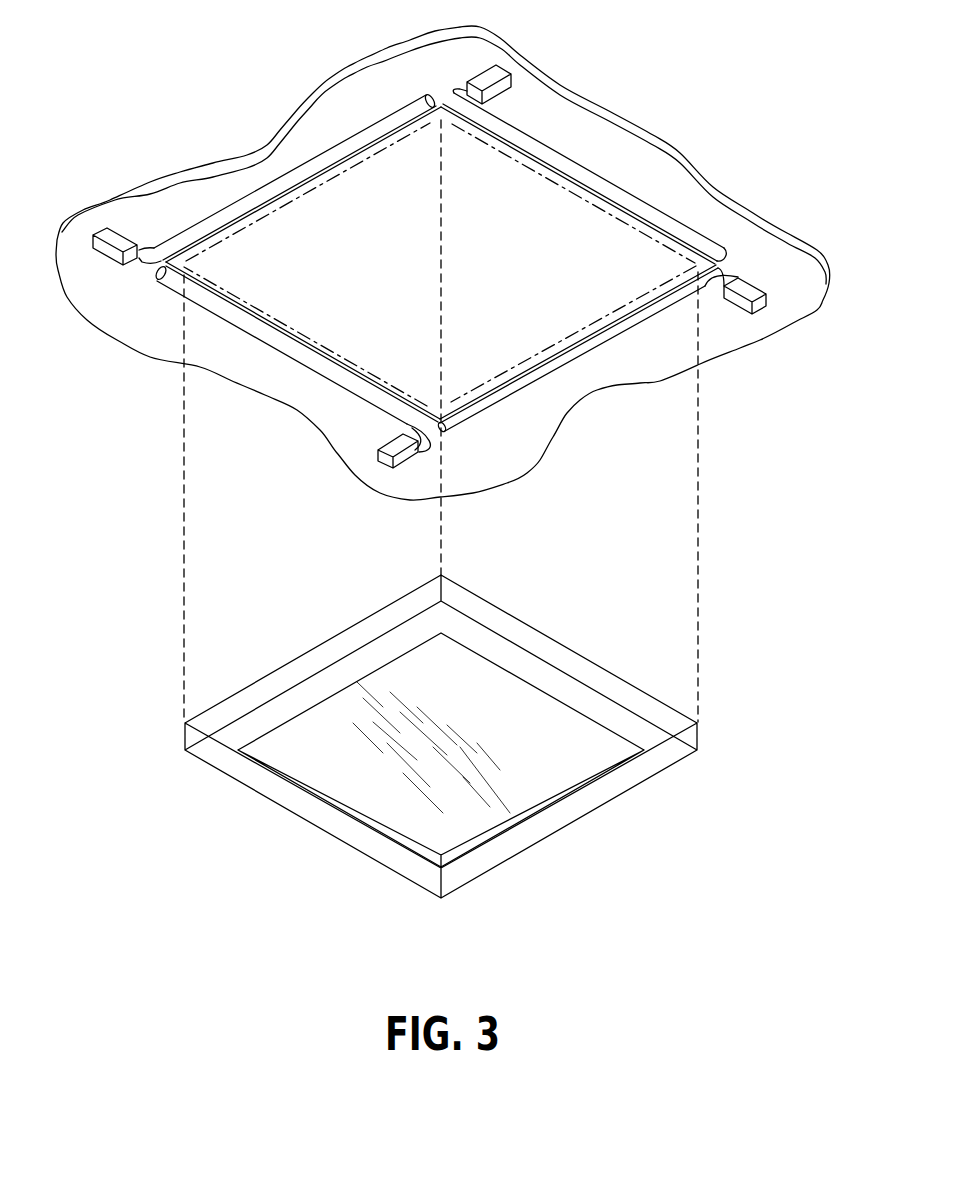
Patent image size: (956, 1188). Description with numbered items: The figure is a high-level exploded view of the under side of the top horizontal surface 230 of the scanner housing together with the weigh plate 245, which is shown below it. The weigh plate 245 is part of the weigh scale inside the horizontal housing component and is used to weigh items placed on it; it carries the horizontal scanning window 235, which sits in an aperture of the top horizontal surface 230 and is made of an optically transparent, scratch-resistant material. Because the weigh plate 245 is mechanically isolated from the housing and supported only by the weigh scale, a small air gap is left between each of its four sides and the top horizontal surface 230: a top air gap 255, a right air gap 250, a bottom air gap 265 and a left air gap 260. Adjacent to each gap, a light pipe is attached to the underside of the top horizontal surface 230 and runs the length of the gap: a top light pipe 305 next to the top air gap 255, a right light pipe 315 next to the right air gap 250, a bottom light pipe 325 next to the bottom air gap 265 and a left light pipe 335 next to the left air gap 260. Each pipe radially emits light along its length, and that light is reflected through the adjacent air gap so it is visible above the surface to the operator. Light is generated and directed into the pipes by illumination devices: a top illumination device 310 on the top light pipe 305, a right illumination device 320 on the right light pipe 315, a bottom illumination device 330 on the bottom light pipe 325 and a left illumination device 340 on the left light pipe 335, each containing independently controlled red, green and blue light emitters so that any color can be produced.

The top horizontal surface 230 is at (640, 153).
The horizontal scanning window 235 is at (545, 783).
The weigh plate 245 is at (338, 830).
The right air gap 250 is at (514, 360).
The top air gap 255 is at (367, 368).
The left air gap 260 is at (237, 233).
The bottom air gap 265 is at (511, 162).
The top light pipe 305 is at (295, 362).
The top illumination device 310 is at (393, 466).
The right light pipe 315 is at (647, 322).
The right illumination device 320 is at (750, 305).
The bottom light pipe 325 is at (558, 162).
The bottom illumination device 330 is at (502, 78).
The left light pipe 335 is at (195, 230).
The left illumination device 340 is at (120, 233).